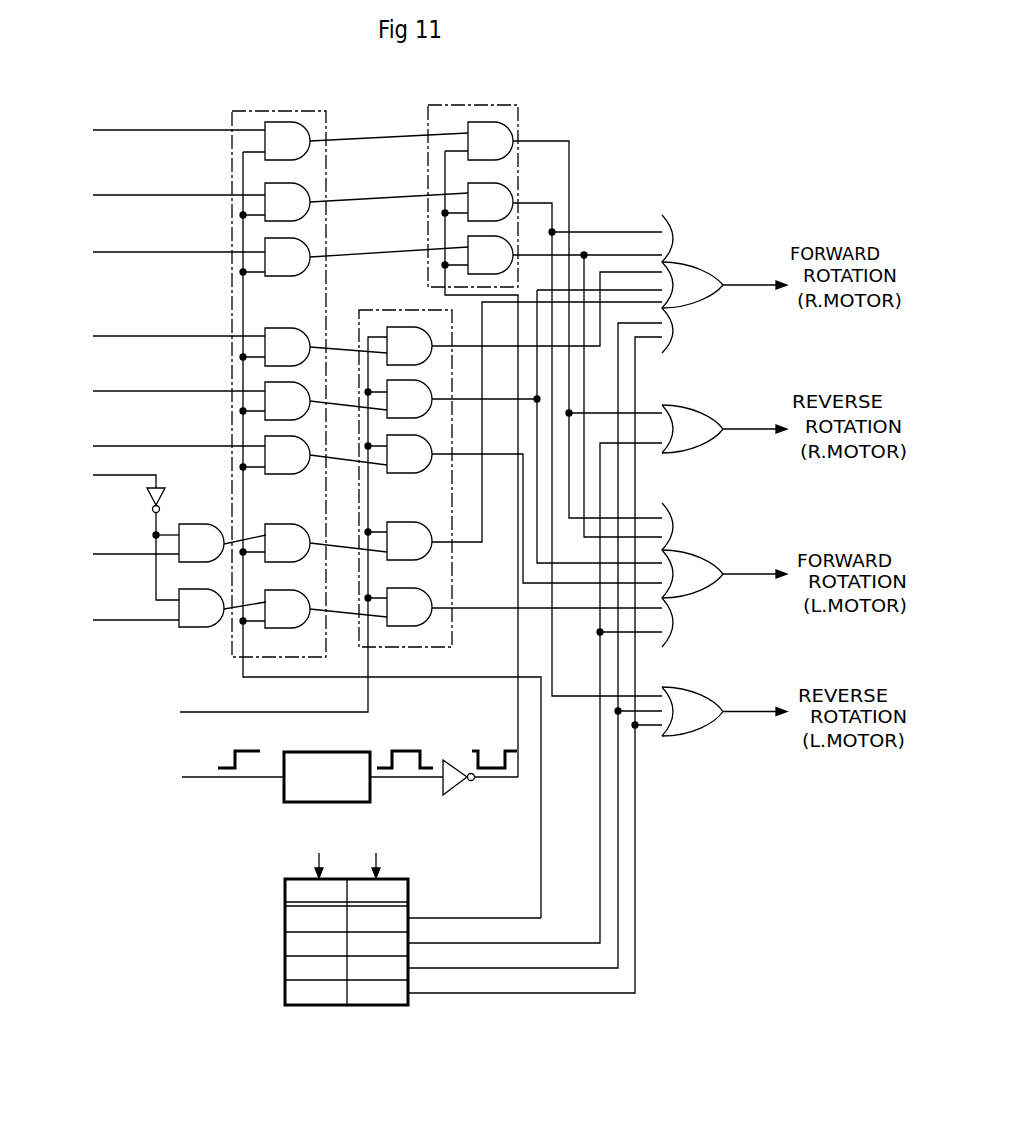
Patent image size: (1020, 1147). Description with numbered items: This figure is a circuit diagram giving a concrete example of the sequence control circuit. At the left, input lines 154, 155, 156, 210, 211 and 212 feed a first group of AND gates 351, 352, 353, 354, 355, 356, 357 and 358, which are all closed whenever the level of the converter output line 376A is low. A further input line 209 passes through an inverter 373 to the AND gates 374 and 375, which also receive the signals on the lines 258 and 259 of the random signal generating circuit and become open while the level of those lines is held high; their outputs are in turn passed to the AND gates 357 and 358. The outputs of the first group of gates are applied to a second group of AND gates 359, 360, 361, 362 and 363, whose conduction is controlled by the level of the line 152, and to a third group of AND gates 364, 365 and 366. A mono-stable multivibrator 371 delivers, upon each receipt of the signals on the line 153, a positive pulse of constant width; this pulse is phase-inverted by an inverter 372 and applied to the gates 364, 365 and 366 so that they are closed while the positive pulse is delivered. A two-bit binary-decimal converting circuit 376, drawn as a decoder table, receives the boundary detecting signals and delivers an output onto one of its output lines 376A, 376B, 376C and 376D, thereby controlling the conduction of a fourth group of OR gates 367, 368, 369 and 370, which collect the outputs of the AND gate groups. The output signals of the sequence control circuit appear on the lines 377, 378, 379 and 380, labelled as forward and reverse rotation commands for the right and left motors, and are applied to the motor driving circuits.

The line 152 is at (238, 714).
The line 153 is at (238, 779).
The line 154 is at (160, 130).
The line 155 is at (160, 195).
The line 156 is at (160, 252).
The line 209 is at (128, 478).
The line 210 is at (162, 336).
The line 211 is at (162, 391).
The line 212 is at (162, 446).
The line 258 is at (138, 556).
The line 259 is at (140, 622).
The AND gate 351 is at (305, 150).
The AND gate 352 is at (305, 212).
The AND gate 353 is at (305, 270).
The AND gate 354 is at (300, 367).
The AND gate 355 is at (300, 420).
The AND gate 356 is at (300, 475).
The AND gate 357 is at (305, 560).
The AND gate 358 is at (275, 628).
The AND gate 359 is at (398, 326).
The AND gate 360 is at (430, 410).
The AND gate 361 is at (398, 474).
The AND gate 362 is at (430, 558).
The AND gate 363 is at (430, 623).
The AND gate 364 is at (510, 152).
The AND gate 365 is at (480, 183).
The AND gate 366 is at (480, 236).
The OR gate 367 is at (700, 308).
The OR gate 368 is at (700, 453).
The OR gate 369 is at (700, 598).
The OR gate 370 is at (707, 736).
The mono-stable multivibrator 371 is at (352, 802).
The inverter 372 is at (452, 795).
The inverter 373 is at (168, 500).
The AND gate 374 is at (187, 563).
The AND gate 375 is at (187, 628).
The binary-decimal converting circuit 376 is at (285, 993).
The output line 376A is at (458, 918).
The output line 376B is at (458, 943).
The output line 376C is at (458, 968).
The output line 376D is at (458, 993).
The line 377 is at (735, 288).
The line 378 is at (745, 431).
The line 379 is at (748, 575).
The line 380 is at (755, 714).